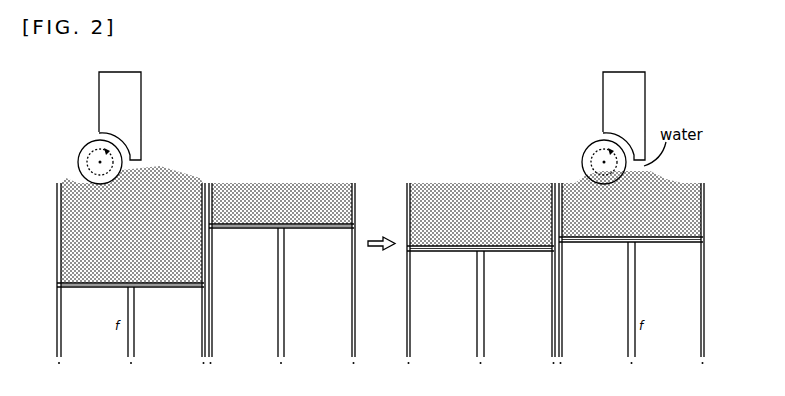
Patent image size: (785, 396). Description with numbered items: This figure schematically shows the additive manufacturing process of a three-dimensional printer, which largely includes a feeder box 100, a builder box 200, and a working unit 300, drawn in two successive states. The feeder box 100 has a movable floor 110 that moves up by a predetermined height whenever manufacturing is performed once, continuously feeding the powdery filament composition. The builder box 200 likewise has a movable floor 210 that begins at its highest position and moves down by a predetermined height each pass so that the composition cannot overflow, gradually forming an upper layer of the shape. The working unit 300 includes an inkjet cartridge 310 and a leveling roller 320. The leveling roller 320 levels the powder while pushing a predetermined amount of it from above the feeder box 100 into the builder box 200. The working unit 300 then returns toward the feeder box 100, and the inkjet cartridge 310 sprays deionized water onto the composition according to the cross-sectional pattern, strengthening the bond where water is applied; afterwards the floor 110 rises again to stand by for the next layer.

The feeder box 100 is at (52, 177).
The movable floor 110 is at (83, 288).
The builder box 200 is at (357, 181).
The movable floor 210 is at (315, 229).
The working unit 300 is at (361, 128).
The inkjet cartridge 310 is at (141, 95).
The leveling roller 320 is at (141, 150).